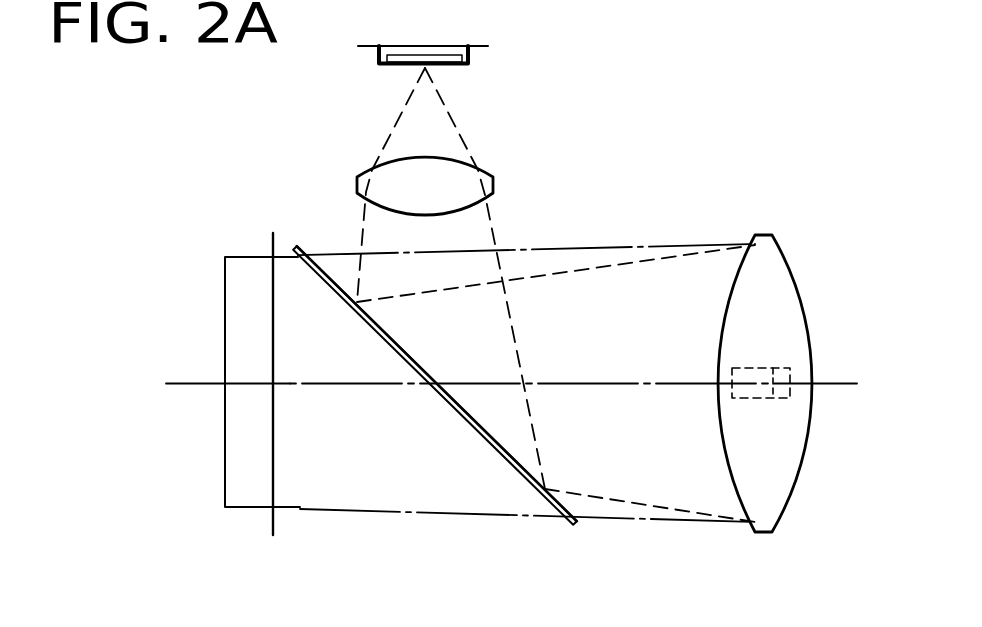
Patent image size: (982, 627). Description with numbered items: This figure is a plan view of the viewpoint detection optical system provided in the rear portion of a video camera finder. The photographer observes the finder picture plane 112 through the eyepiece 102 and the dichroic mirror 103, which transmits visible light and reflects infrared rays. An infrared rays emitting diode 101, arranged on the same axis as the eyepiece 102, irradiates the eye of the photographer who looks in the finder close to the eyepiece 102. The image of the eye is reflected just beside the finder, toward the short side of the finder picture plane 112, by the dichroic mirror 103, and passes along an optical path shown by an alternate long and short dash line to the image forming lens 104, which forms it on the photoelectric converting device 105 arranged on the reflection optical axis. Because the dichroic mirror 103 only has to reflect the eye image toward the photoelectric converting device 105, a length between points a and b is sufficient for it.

The infrared rays emitting diode 101 is at (755, 398).
The eyepiece 102 is at (803, 312).
The dichroic mirror 103 is at (573, 523).
The image forming lens 104 is at (487, 173).
The photoelectric converting device 105 is at (448, 68).
The finder picture plane 112 is at (275, 480).
The point a is at (544, 497).
The point b is at (356, 298).